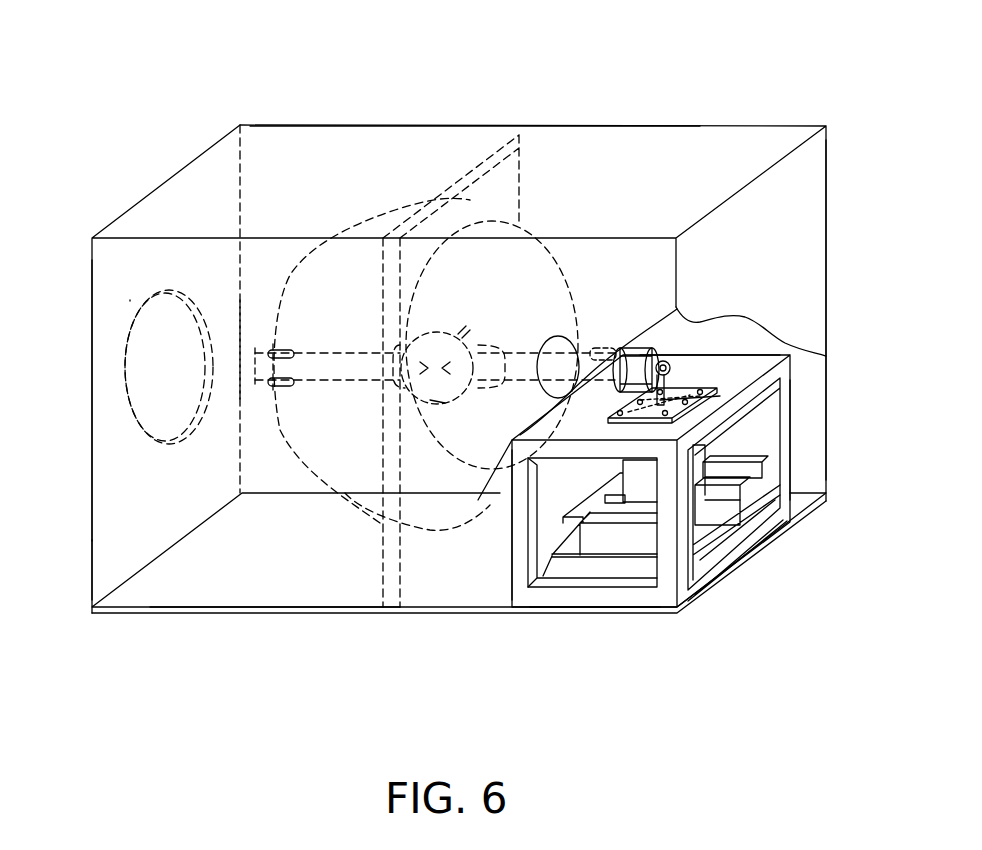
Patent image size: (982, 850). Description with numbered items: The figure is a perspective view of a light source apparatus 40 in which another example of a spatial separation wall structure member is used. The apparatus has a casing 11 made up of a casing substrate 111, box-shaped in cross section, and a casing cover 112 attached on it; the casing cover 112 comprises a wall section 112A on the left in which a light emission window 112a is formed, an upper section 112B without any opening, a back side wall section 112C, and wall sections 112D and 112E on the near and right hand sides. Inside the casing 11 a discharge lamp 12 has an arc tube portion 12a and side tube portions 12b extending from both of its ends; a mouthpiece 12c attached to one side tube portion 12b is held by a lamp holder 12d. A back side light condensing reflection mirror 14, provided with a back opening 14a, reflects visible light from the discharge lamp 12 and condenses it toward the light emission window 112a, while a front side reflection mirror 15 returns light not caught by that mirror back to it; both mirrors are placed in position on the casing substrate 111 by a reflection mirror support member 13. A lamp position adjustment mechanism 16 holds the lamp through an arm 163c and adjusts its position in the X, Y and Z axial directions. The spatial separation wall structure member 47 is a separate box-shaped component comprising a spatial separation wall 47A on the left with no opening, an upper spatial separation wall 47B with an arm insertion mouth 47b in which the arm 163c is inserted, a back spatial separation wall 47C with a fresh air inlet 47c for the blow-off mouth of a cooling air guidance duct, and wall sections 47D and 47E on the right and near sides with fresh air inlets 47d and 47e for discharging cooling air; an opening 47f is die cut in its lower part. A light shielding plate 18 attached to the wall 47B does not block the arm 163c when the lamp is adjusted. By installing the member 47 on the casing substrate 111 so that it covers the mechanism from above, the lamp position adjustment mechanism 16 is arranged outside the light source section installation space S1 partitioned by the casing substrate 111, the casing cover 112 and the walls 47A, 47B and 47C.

The casing 11 is at (80, 532).
The light source apparatus 40 is at (80, 325).
The casing cover 112 is at (92, 449).
The light emission window 112a is at (128, 356).
The wall section 112A is at (100, 503).
The section 112B is at (617, 165).
The wall section 112C is at (342, 150).
The wall section 112D is at (238, 608).
The wall section 112E is at (805, 270).
The casing substrate 111 is at (300, 618).
The reflection mirror support member 13 is at (508, 185).
The back side light condensing reflection mirror 14 is at (558, 278).
The back opening 14a is at (553, 338).
The front side reflection mirror 15 is at (344, 490).
The discharge lamp 12 is at (457, 368).
The arc tube portion 12a is at (445, 403).
The side tube portions 12b is at (358, 383).
The mouthpiece 12c is at (305, 383).
The lamp holder 12d is at (634, 350).
The light source section installation space S1 is at (652, 257).
The arm 163c is at (668, 368).
The light shielding plate 18 is at (675, 397).
The spatial separation wall structure member 47 is at (683, 503).
The spatial separation wall 47A is at (545, 530).
The spatial separation wall 47B is at (760, 364).
The spatial separation wall 47C is at (800, 448).
The wall section 47D is at (585, 597).
The wall section 47E is at (735, 552).
The arm insertion mouth 47b is at (688, 405).
The fresh air inlet 47c is at (762, 470).
The fresh air inlet 47d is at (560, 575).
The fresh air inlet 47e is at (770, 487).
The opening 47f is at (600, 518).
The lamp position adjustment mechanism 16 is at (708, 454).